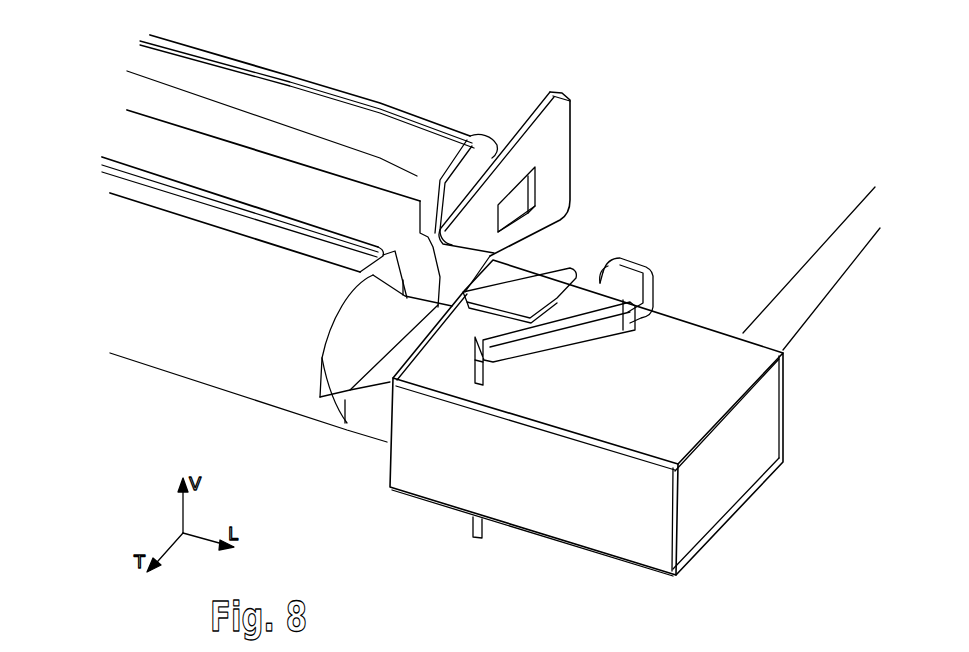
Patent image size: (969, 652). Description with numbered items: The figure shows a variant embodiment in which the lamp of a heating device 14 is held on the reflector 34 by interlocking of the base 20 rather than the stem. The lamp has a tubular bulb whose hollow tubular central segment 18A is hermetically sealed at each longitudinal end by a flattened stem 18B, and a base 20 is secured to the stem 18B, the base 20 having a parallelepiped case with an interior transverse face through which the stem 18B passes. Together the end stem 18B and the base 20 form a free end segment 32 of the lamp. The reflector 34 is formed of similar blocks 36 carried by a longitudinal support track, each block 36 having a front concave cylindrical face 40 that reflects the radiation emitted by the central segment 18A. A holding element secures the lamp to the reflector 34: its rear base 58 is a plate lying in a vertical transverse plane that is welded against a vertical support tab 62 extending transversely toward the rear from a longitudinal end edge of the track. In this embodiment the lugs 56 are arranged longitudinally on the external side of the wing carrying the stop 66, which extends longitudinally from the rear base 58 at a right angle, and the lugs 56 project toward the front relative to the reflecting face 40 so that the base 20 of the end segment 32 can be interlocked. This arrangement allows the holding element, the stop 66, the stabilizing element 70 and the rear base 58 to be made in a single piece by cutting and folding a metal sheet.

The heating device 14 is at (464, 80).
The hollow tubular central segment 18A is at (188, 337).
The stem 18B is at (372, 422).
The base 20 is at (613, 560).
The free end segment 32 is at (510, 613).
The reflector 34 is at (333, 91).
The block 36 is at (225, 165).
The front concave cylindrical face 40 is at (387, 267).
The lug 56 is at (592, 327).
The rear base 58 is at (557, 143).
The vertical support tab 62 is at (537, 107).
The stop 66 is at (615, 278).
The stabilizing element 70 is at (530, 280).